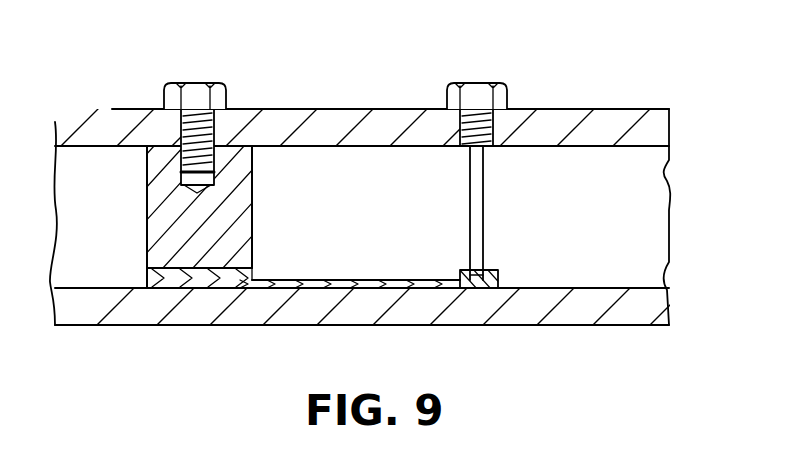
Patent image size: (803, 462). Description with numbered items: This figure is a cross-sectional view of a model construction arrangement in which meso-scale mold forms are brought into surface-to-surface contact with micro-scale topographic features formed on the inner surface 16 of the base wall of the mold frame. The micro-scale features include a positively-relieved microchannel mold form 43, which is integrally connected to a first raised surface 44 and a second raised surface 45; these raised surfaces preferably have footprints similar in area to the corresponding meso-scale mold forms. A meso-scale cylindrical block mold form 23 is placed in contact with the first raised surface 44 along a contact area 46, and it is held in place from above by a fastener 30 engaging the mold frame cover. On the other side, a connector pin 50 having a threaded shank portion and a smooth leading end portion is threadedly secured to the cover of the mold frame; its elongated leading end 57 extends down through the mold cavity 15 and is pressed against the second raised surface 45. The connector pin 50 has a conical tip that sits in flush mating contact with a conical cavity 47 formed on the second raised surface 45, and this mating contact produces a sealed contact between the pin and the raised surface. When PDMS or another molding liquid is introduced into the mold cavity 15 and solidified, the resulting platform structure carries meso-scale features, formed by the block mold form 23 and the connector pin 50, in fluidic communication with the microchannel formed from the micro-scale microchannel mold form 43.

The mold cavity 15 is at (398, 196).
The inner surface 16 is at (643, 148).
The meso-scale cylindrical block mold form 23 is at (260, 196).
The bolt 30 is at (204, 84).
The microchannel mold form 43 is at (337, 280).
The first raised surface 44 is at (236, 282).
The second raised surface 45 is at (498, 278).
The contact area 46 is at (215, 268).
The conical cavity 47 is at (478, 279).
The connector pin 50 is at (487, 84).
The rod 57 is at (492, 207).